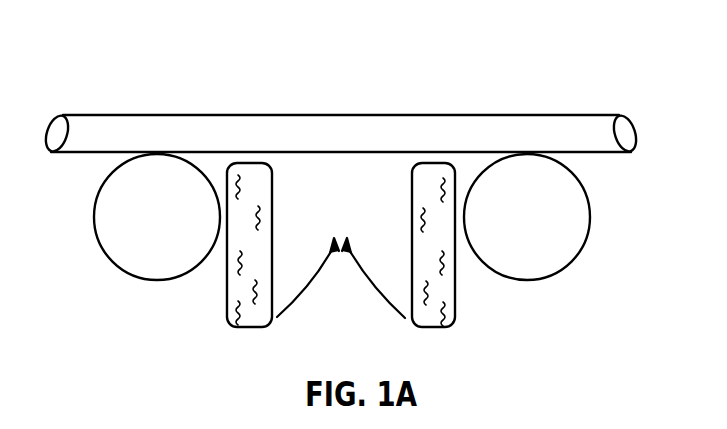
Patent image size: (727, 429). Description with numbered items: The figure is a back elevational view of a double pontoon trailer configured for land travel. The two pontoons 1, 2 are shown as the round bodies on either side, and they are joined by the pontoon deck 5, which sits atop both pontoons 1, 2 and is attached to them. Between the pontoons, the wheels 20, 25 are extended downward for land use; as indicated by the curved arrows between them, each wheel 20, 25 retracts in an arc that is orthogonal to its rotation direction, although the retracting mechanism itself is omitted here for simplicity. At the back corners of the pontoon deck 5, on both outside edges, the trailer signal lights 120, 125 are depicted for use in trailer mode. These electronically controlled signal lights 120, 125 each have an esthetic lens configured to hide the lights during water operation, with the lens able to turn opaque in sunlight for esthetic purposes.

The deck 5 is at (348, 142).
The trailer signal light 125 is at (60, 127).
The trailer signal light 120 is at (623, 130).
The pontoon 1 is at (151, 222).
The pontoon 2 is at (521, 222).
The wheel 20 is at (227, 291).
The wheel 25 is at (455, 290).